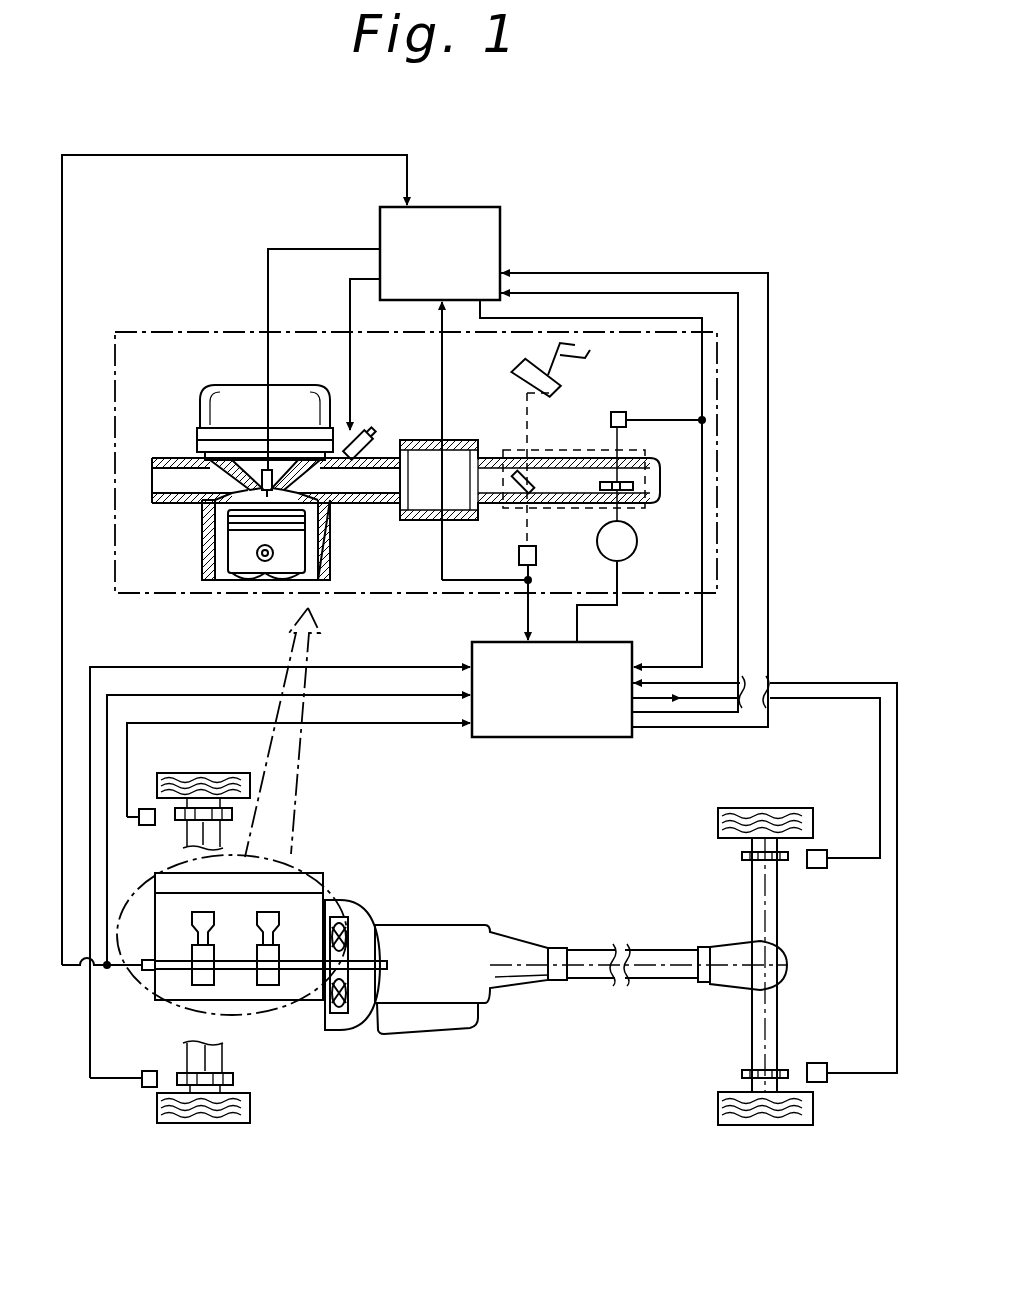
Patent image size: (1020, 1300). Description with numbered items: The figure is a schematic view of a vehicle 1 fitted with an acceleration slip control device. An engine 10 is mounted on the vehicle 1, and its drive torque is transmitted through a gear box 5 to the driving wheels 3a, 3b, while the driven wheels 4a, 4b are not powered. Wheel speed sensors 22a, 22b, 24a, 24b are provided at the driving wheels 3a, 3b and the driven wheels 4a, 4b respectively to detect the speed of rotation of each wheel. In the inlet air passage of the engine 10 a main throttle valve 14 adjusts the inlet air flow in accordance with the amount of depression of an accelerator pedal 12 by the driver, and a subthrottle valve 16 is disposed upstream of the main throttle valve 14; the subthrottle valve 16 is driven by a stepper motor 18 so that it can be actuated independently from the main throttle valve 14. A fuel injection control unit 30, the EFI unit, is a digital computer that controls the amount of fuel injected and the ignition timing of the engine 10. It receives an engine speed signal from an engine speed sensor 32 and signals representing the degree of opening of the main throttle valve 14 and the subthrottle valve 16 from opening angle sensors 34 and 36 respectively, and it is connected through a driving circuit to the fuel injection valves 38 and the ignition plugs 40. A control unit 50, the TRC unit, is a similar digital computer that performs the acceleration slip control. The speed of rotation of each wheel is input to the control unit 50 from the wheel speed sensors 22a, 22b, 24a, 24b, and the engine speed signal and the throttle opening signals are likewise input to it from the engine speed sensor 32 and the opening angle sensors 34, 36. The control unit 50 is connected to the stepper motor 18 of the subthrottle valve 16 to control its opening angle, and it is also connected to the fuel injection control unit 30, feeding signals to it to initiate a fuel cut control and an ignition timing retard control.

The vehicle 1 is at (490, 961).
The driving wheel 3a is at (803, 808).
The driving wheel 3b is at (795, 1125).
The driven wheel 4a is at (206, 774).
The driven wheel 4b is at (200, 1123).
The gear box 5 is at (428, 924).
The engine 10 is at (170, 330).
The accelerator pedal 12 is at (522, 380).
The main throttle valve 14 is at (526, 478).
The subthrottle valve 16 is at (628, 476).
The stepper motor 18 is at (636, 553).
The wheel speed sensor 22a is at (820, 868).
The wheel speed sensor 22b is at (822, 1063).
The wheel speed sensor 24a is at (139, 821).
The wheel speed sensor 24b is at (144, 1072).
The fuel injection control unit 30 is at (454, 207).
The engine speed sensor 32 is at (146, 972).
The opening angle sensor 34 is at (536, 556).
The opening angle sensor 36 is at (618, 412).
The fuel injection valve 38 is at (363, 438).
The ignition plug 40 is at (285, 387).
The control unit 50 is at (632, 642).